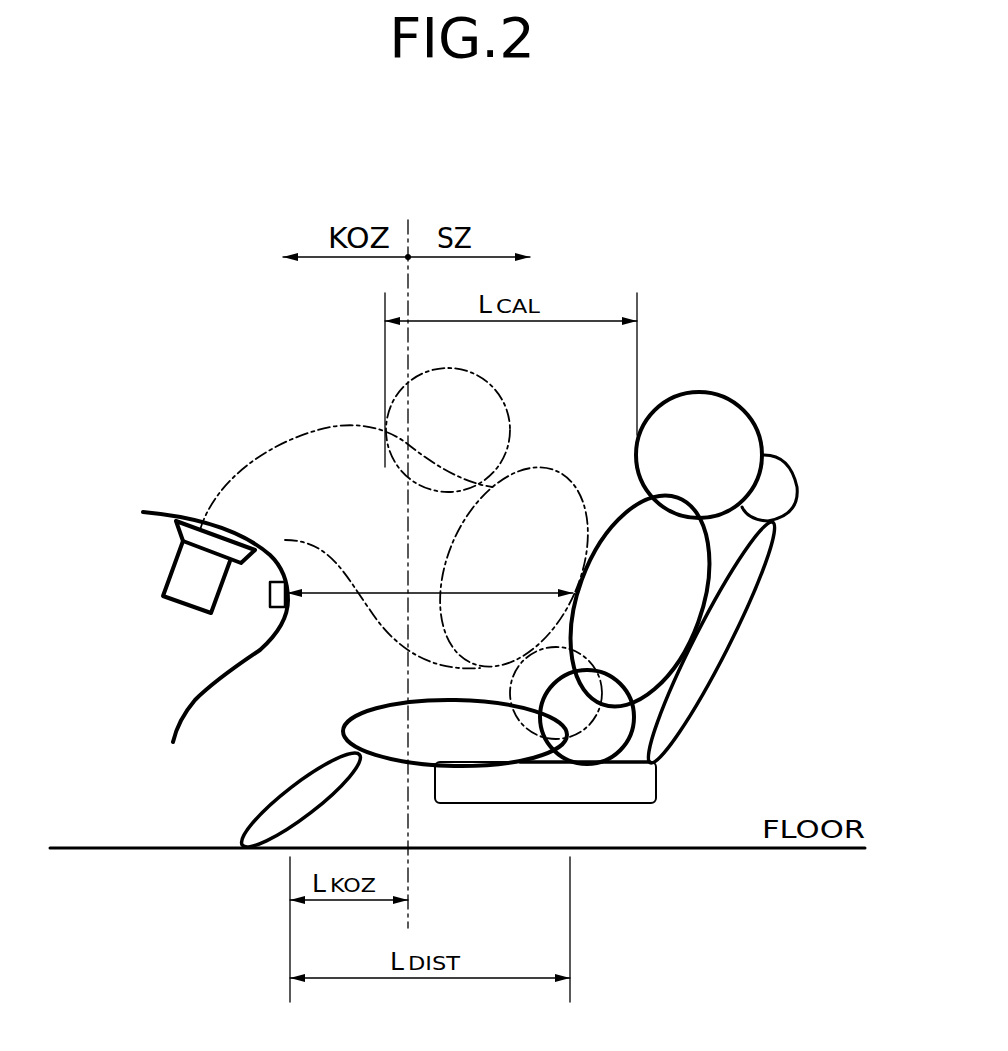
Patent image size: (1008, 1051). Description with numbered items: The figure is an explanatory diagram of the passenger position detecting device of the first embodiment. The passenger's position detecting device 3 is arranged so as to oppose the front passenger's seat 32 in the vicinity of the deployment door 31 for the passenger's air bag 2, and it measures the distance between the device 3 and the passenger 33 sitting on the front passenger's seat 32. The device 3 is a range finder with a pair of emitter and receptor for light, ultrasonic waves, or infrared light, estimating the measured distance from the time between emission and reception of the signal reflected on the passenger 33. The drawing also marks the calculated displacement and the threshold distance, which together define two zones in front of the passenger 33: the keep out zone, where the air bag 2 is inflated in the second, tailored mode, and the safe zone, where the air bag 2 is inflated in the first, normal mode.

The air bag 2 is at (295, 430).
The passenger's position detecting device 3 is at (270, 598).
The deployment door 31 is at (190, 520).
The front passenger's seat 32 is at (762, 578).
The passenger 33 is at (705, 392).